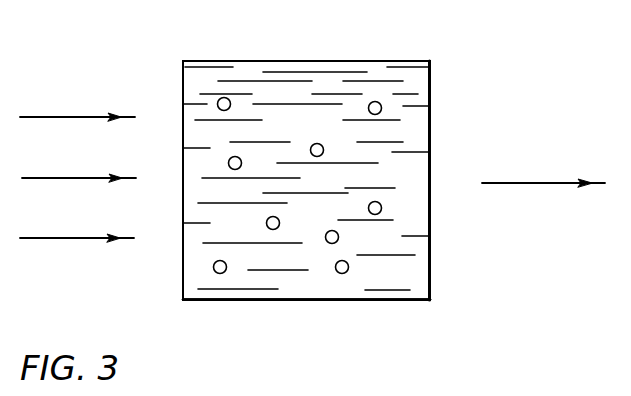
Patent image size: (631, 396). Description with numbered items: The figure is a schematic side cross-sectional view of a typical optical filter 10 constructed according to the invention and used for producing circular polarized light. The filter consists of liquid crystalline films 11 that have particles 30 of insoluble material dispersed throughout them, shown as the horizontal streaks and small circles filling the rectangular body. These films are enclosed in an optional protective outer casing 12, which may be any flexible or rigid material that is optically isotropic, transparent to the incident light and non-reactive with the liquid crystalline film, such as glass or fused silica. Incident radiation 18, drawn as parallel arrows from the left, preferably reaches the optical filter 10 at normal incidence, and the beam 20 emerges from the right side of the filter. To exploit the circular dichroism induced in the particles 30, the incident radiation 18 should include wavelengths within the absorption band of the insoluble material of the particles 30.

The optical filter 10 is at (172, 70).
The liquid crystalline films 11 is at (250, 296).
The protective outer casing 12 is at (300, 62).
The incident radiation 18 is at (48, 116).
The beam 20 is at (505, 182).
The particles 30 is at (340, 275).